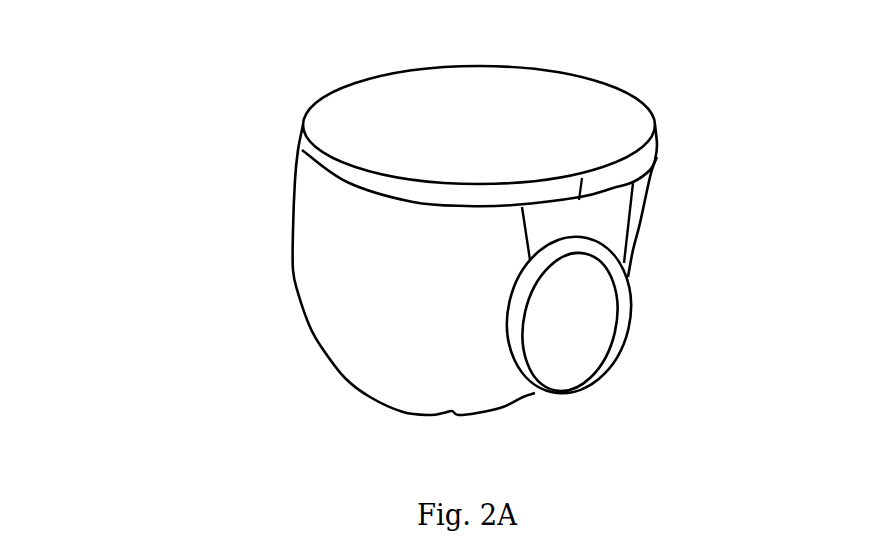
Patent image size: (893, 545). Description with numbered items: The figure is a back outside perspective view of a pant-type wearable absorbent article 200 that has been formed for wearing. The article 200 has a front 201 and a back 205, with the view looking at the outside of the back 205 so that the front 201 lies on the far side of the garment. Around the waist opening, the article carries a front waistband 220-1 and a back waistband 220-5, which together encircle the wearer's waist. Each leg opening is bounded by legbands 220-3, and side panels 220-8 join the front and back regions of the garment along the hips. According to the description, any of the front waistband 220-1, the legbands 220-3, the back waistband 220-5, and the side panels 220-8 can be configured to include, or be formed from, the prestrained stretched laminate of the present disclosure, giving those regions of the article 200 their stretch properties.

The pant-type wearable absorbent article 200 is at (188, 52).
The front 201 is at (262, 284).
The back 205 is at (672, 215).
The front waistband 220-1 is at (308, 134).
The legbands 220-3 is at (620, 312).
The back waistband 220-5 is at (652, 150).
The side panels 220-8 is at (600, 231).